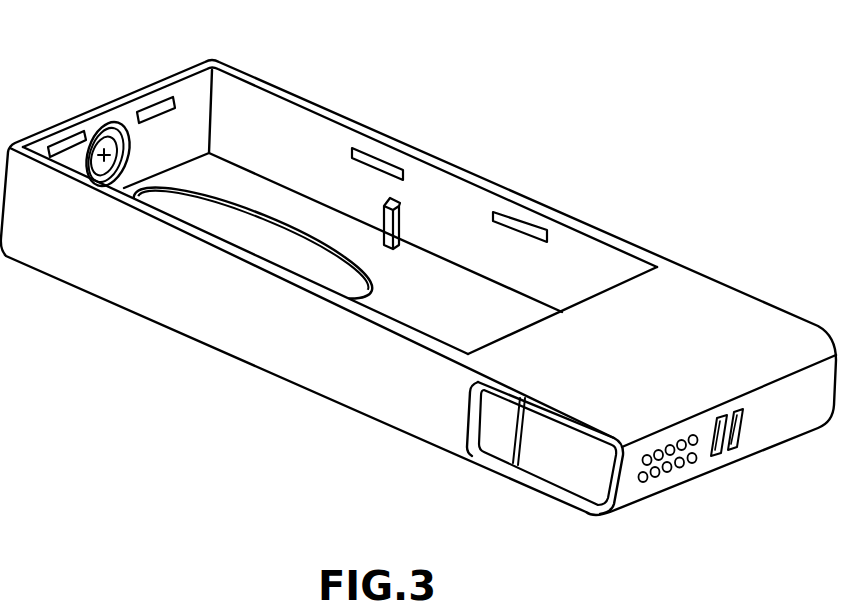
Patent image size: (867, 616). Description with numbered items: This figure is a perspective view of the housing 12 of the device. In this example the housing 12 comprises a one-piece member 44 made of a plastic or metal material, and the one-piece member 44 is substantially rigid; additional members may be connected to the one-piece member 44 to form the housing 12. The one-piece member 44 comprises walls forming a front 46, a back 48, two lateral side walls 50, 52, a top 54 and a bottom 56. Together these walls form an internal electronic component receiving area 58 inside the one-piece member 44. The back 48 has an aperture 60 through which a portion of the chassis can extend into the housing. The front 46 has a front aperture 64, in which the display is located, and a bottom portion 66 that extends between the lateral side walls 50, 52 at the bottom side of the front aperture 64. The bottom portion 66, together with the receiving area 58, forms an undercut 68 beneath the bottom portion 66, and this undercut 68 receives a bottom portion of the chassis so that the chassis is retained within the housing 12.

The housing 12 is at (652, 72).
The one-piece member 44 is at (277, 93).
The front 46 is at (678, 303).
The back 48 is at (417, 275).
The lateral side wall 50 is at (218, 308).
The lateral side wall 52 is at (335, 138).
The top 54 is at (117, 97).
The bottom 56 is at (763, 430).
The internal electronic component receiving area 58 is at (517, 248).
The aperture 60 is at (225, 223).
The front aperture 64 is at (171, 94).
The bottom portion 66 is at (715, 342).
The undercut 68 is at (500, 316).